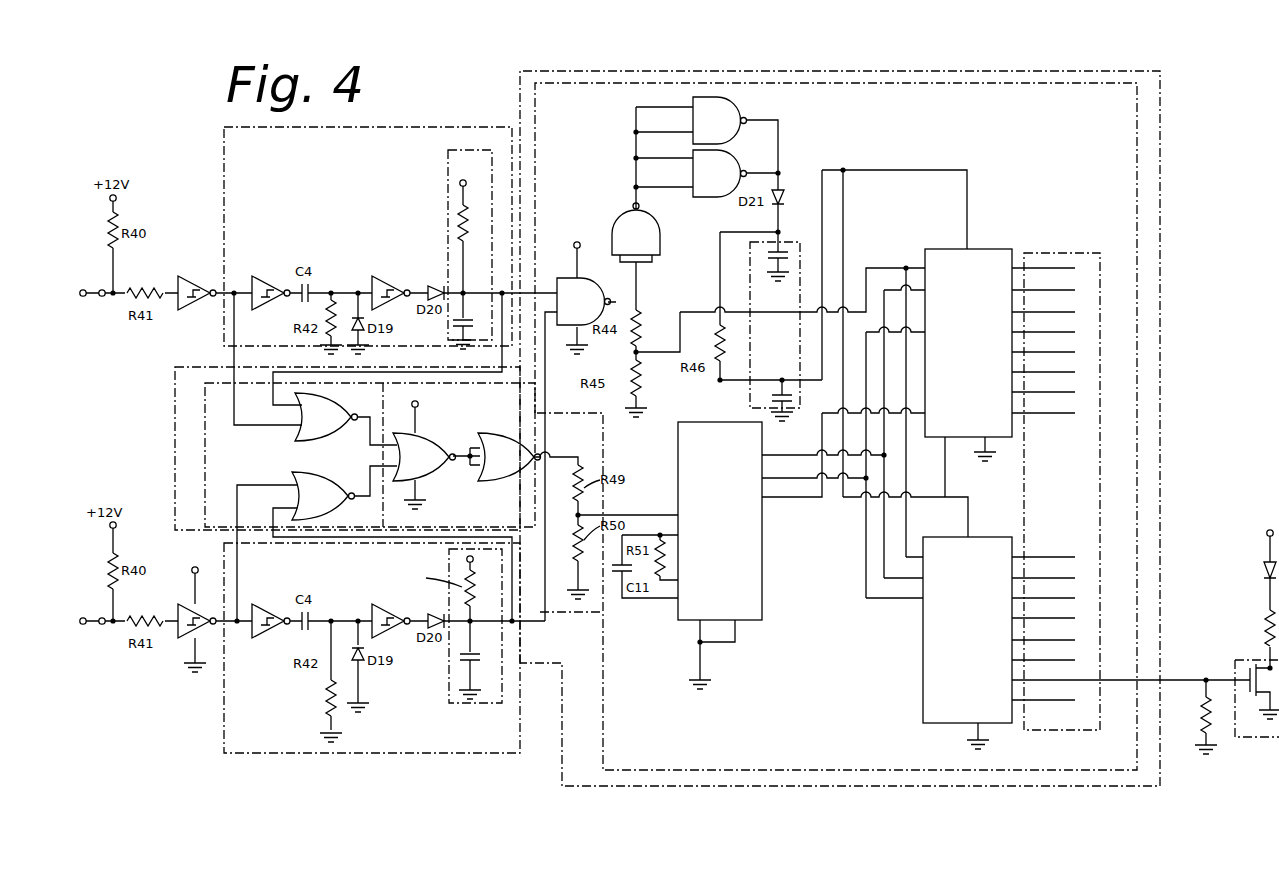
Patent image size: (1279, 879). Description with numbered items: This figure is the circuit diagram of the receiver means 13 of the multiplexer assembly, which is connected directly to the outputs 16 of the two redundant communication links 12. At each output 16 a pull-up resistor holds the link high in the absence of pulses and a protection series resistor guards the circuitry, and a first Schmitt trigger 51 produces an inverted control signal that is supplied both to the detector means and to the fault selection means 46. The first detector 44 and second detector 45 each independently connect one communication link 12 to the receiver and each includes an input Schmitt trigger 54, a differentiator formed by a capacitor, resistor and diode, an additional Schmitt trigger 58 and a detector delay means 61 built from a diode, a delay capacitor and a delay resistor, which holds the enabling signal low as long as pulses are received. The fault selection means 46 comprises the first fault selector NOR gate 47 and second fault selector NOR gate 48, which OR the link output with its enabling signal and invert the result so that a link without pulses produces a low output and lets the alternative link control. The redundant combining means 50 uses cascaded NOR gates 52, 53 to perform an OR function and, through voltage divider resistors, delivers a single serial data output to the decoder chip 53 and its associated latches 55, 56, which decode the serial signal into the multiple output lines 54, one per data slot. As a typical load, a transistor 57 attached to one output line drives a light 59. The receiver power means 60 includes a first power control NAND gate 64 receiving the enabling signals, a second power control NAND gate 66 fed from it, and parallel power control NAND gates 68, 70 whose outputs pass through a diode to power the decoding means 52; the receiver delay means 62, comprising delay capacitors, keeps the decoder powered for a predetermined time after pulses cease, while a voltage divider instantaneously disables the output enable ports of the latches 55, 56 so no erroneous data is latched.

The communication link 12 is at (92, 290).
The receiver means 13 is at (1163, 92).
The output 16 is at (102, 298).
The first detector 44 is at (385, 126).
The second detector 45 is at (283, 756).
The fault selection means 46 is at (205, 455).
The first fault selector NOR gate 47 is at (300, 432).
The second fault selector NOR gate 48 is at (305, 496).
The redundant combining means 50 is at (605, 428).
The first Schmitt trigger 51 is at (187, 276).
The decoding means / combining NOR gate 52 is at (433, 468).
The decoder chip / combining NOR gate 53 is at (490, 442).
The output lines / input Schmitt trigger 54 is at (265, 278).
The latch 55 is at (975, 260).
The latch / differentiator 56 is at (932, 683).
The transistor 57 is at (1240, 740).
The additional Schmitt trigger 58 is at (382, 280).
The light 59 is at (1262, 572).
The receiver power means 60 is at (546, 72).
The detector delay means 61 is at (448, 192).
The receiver delay means 62 is at (750, 295).
The first power control NAND gate 64 is at (572, 290).
The second power control NAND gate 66 is at (622, 232).
The parallel power control NAND gate 68 is at (735, 165).
The parallel power control NAND gate 70 is at (746, 118).